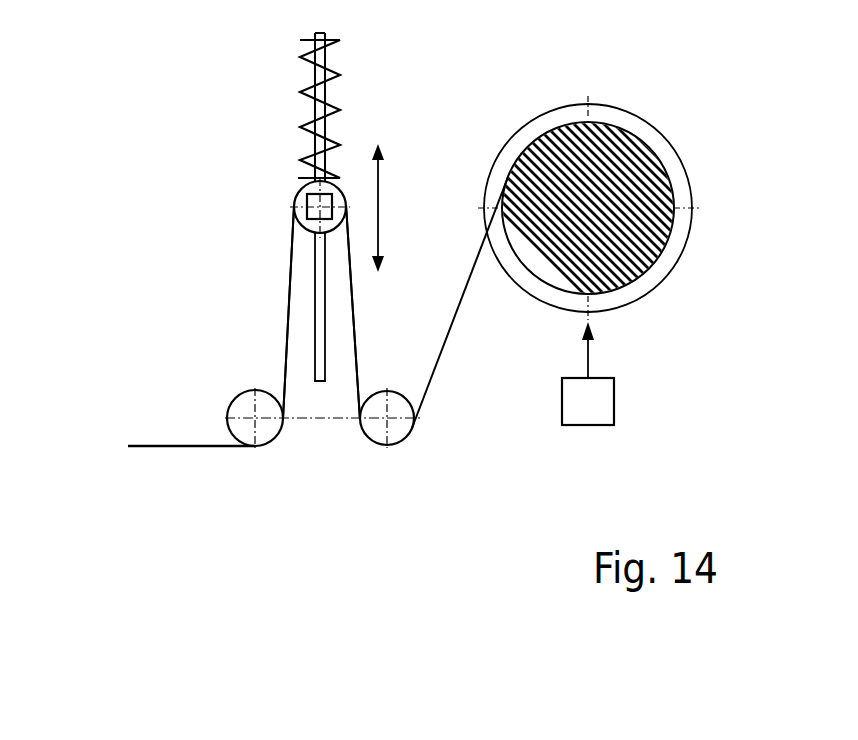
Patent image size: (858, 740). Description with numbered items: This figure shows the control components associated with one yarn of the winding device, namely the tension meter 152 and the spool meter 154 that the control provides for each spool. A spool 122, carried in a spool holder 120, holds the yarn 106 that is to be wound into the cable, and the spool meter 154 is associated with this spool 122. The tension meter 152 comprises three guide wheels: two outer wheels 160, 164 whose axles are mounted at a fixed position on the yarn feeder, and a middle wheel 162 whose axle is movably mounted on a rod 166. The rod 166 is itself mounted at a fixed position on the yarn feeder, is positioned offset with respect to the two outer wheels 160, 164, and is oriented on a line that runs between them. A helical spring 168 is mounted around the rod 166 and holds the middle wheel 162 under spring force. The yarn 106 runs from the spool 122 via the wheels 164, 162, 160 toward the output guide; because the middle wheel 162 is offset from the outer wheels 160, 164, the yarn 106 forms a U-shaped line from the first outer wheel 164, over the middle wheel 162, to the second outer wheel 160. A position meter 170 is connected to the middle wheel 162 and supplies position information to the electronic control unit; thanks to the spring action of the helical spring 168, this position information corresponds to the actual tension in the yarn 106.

The yarn 106 is at (448, 352).
The spool holder 120 is at (570, 108).
The spool 122 is at (527, 150).
The tension meter 152 is at (367, 584).
The spool meter 154 is at (618, 412).
The guide wheel 160 is at (253, 463).
The middle wheel 162 is at (277, 228).
The guide wheel 164 is at (387, 463).
The rod 166 is at (301, 288).
The helical spring 168 is at (303, 91).
The position meter 170 is at (318, 206).